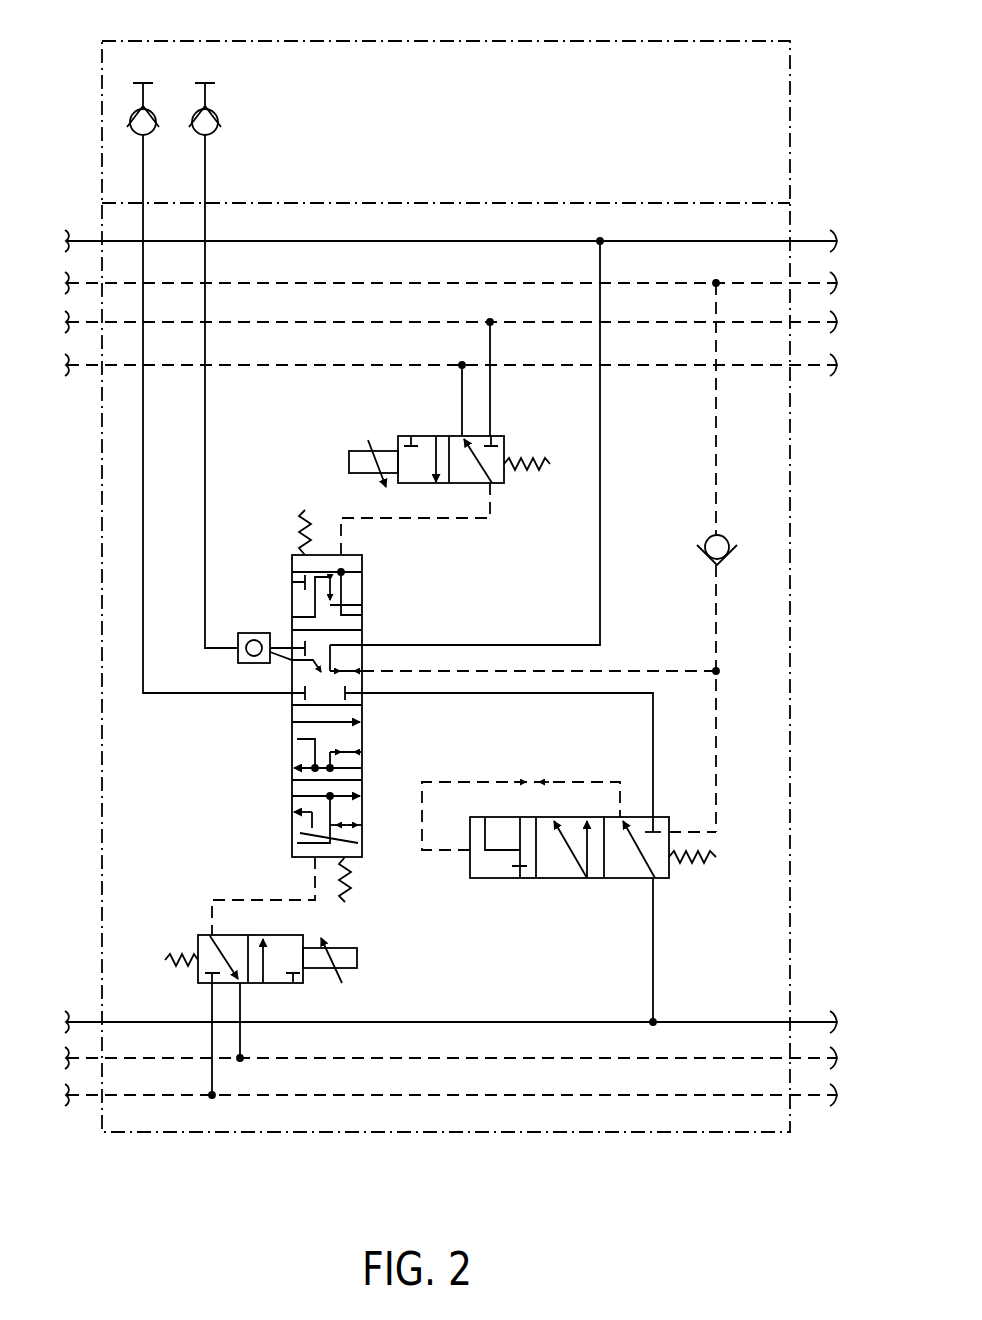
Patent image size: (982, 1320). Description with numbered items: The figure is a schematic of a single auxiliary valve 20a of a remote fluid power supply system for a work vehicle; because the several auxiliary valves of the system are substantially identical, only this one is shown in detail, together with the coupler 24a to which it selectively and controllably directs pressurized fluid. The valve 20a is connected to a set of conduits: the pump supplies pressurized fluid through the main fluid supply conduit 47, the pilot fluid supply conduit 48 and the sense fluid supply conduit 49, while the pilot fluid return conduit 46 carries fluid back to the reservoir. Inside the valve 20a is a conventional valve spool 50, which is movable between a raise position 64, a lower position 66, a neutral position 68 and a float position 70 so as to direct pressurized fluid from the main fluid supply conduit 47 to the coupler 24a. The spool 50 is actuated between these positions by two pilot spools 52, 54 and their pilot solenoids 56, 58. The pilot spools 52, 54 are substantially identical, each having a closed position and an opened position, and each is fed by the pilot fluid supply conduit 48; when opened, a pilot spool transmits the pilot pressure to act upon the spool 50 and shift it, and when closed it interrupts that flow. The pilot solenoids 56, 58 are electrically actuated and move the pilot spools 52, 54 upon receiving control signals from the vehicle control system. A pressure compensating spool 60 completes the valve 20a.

The auxiliary valve 20a is at (796, 217).
The coupler 24a is at (684, 37).
The pilot fluid return conduit 46 is at (814, 240).
The main fluid supply conduit 47 is at (808, 1022).
The pilot fluid supply conduit 48 is at (814, 322).
The sense fluid supply conduit 49 is at (814, 283).
The valve spool 50 is at (322, 706).
The pilot spool 52 is at (461, 456).
The pilot spool 54 is at (229, 956).
The pilot solenoid 56 is at (349, 452).
The pilot solenoid 58 is at (352, 948).
The pressure compensating spool 60 is at (500, 878).
The raise position 64 is at (292, 580).
The lower position 66 is at (362, 738).
The neutral position 68 is at (362, 640).
The float position 70 is at (292, 830).